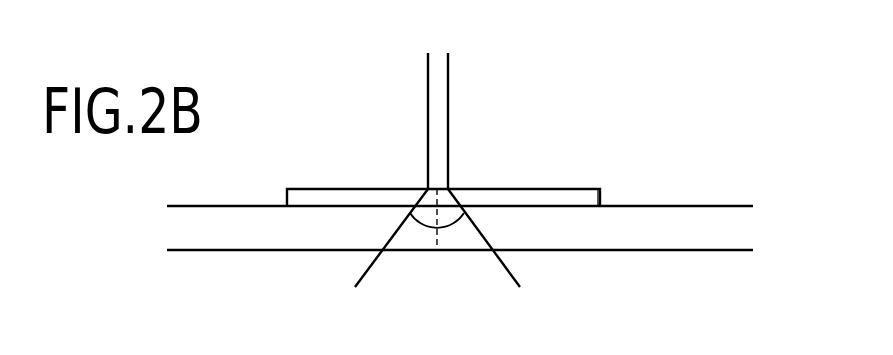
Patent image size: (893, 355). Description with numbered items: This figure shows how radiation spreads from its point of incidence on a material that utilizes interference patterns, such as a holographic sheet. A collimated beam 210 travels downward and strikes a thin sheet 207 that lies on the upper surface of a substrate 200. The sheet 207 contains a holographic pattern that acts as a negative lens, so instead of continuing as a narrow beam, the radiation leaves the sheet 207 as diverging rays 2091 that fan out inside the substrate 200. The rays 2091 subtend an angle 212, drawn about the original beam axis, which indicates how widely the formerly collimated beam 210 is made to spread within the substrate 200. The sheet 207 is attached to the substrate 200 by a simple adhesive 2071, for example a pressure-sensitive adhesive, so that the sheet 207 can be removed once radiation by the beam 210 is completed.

The substrate 200 is at (735, 221).
The thin sheet 207 is at (530, 189).
The adhesive 2071 is at (590, 198).
The collimated beam 210 is at (426, 85).
The angle 212 is at (452, 218).
The rays 2091 is at (397, 228).